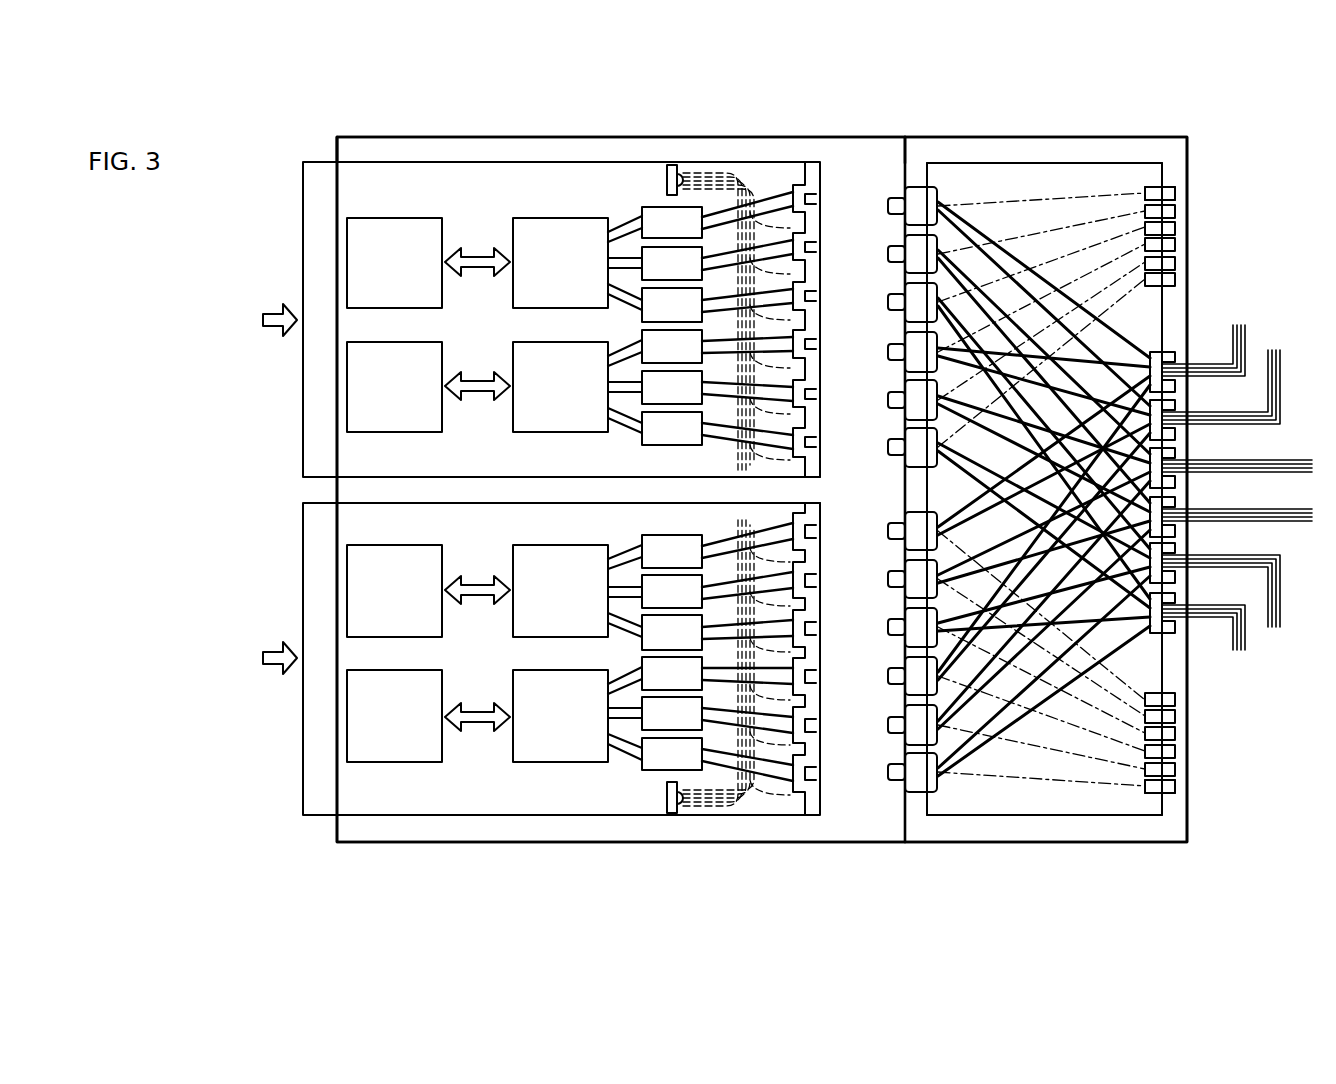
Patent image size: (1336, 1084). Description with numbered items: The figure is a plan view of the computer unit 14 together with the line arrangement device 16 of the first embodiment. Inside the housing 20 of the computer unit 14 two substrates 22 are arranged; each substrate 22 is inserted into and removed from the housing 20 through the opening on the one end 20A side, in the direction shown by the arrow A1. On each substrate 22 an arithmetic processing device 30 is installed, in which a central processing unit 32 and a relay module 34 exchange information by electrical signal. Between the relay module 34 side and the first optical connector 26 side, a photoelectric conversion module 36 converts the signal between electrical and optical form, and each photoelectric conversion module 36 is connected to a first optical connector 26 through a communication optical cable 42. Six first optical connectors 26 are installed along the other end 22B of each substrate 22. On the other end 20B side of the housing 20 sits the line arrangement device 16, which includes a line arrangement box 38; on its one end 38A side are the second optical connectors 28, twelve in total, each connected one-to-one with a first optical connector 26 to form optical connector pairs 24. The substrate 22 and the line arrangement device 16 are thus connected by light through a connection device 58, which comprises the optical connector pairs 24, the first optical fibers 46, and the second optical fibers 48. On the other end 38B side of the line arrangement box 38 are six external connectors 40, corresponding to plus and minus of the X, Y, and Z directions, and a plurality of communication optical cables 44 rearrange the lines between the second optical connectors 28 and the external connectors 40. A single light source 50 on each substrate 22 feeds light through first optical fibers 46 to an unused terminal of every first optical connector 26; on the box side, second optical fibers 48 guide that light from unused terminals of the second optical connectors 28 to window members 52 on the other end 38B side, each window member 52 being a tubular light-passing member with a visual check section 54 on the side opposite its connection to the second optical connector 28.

The computer unit 14 is at (506, 844).
The line arrangement device 16 is at (1045, 846).
The housing 20 is at (778, 845).
The one end 20A is at (337, 158).
The other end 20B is at (903, 163).
The substrate 22 is at (413, 158).
The other end 22B is at (820, 477).
The optical connector pair 24 is at (865, 490).
The first optical connector 26 is at (812, 172).
The second optical connector 28 is at (912, 490).
The arithmetic processing device 30 is at (494, 487).
The central processing unit 32 is at (395, 216).
The relay module 34 is at (567, 180).
The photoelectric conversion module 36 is at (662, 206).
The line arrangement box 38 is at (1128, 817).
The one end 38A is at (930, 815).
The other end 38B is at (1165, 815).
The external connector 40 is at (1165, 352).
The communication optical cable 42 is at (738, 447).
The communication optical cable 44 is at (1120, 345).
The first optical fiber 46 is at (742, 172).
The second optical fiber 48 is at (1035, 190).
The light source 50 is at (672, 163).
The window member 52 is at (1162, 187).
The visual check section 54 is at (1176, 193).
The connection device 58 is at (964, 100).
The arrow A1 is at (272, 310).